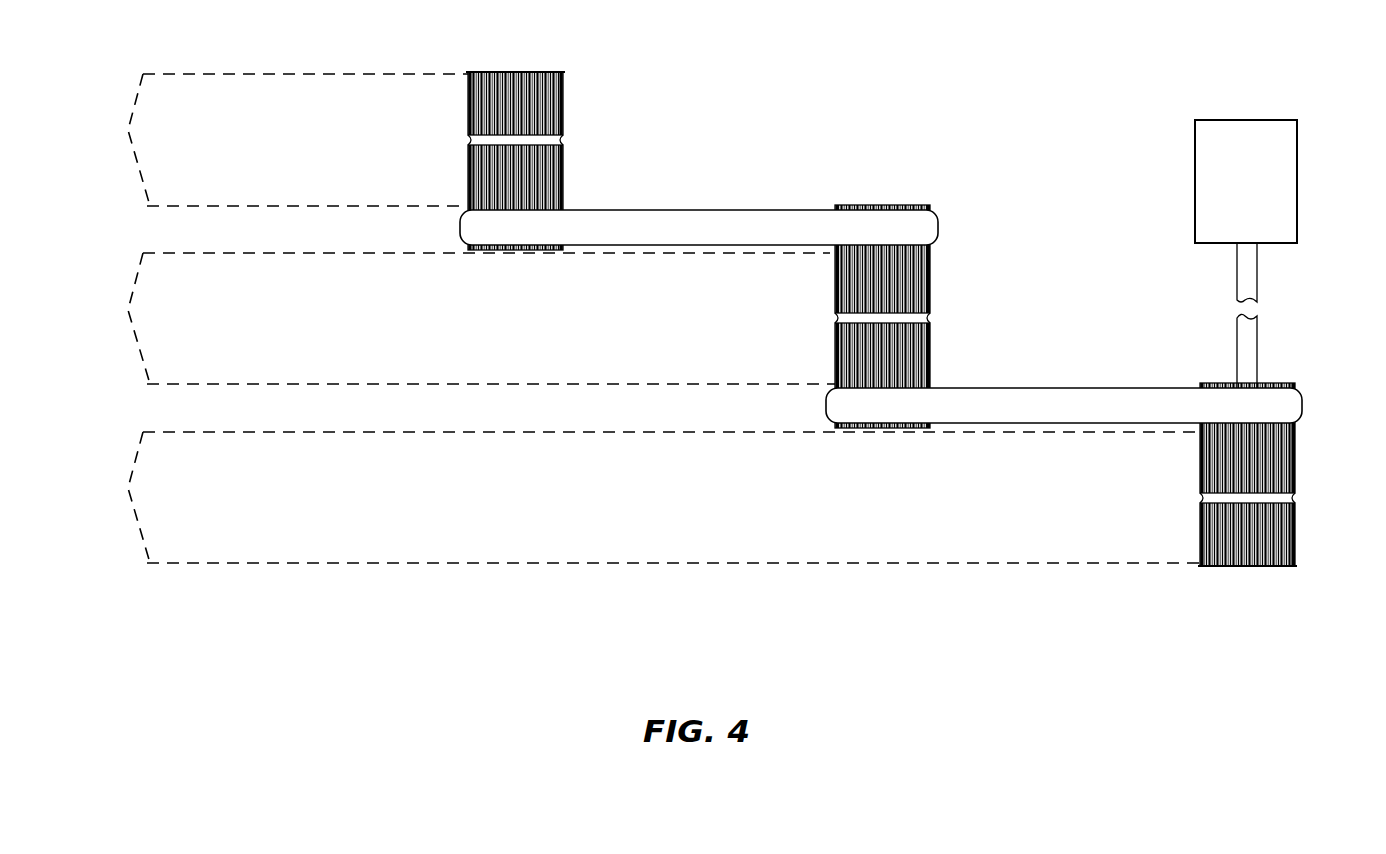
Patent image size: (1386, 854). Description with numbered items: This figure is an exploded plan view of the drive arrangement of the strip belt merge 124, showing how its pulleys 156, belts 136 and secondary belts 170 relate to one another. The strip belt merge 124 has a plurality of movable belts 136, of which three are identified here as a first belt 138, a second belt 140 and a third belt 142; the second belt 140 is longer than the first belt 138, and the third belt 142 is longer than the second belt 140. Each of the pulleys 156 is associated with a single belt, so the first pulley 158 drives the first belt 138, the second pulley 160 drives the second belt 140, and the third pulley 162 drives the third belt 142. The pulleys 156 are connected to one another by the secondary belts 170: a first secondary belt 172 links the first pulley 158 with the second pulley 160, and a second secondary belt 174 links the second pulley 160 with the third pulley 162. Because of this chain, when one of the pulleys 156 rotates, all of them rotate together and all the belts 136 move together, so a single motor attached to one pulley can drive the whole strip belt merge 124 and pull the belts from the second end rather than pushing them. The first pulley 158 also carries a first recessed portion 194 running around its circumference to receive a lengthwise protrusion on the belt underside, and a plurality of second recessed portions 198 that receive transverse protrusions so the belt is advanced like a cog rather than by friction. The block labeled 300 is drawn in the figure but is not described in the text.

The strip belt merge 124 is at (1032, 73).
The belts 136 is at (228, 604).
The first belt 138 is at (128, 130).
The second belt 140 is at (128, 310).
The third belt 142 is at (128, 488).
The pulleys 156 is at (1250, 604).
The first pulley 158 is at (517, 140).
The second pulley 160 is at (930, 292).
The third pulley 162 is at (1295, 533).
The secondary belts 170 is at (923, 296).
The first secondary belt 172 is at (655, 210).
The second secondary belt 174 is at (1302, 403).
The first recessed portion 194 is at (468, 140).
The second recessed portions 198 is at (520, 70).
The actuator 300 is at (1297, 180).